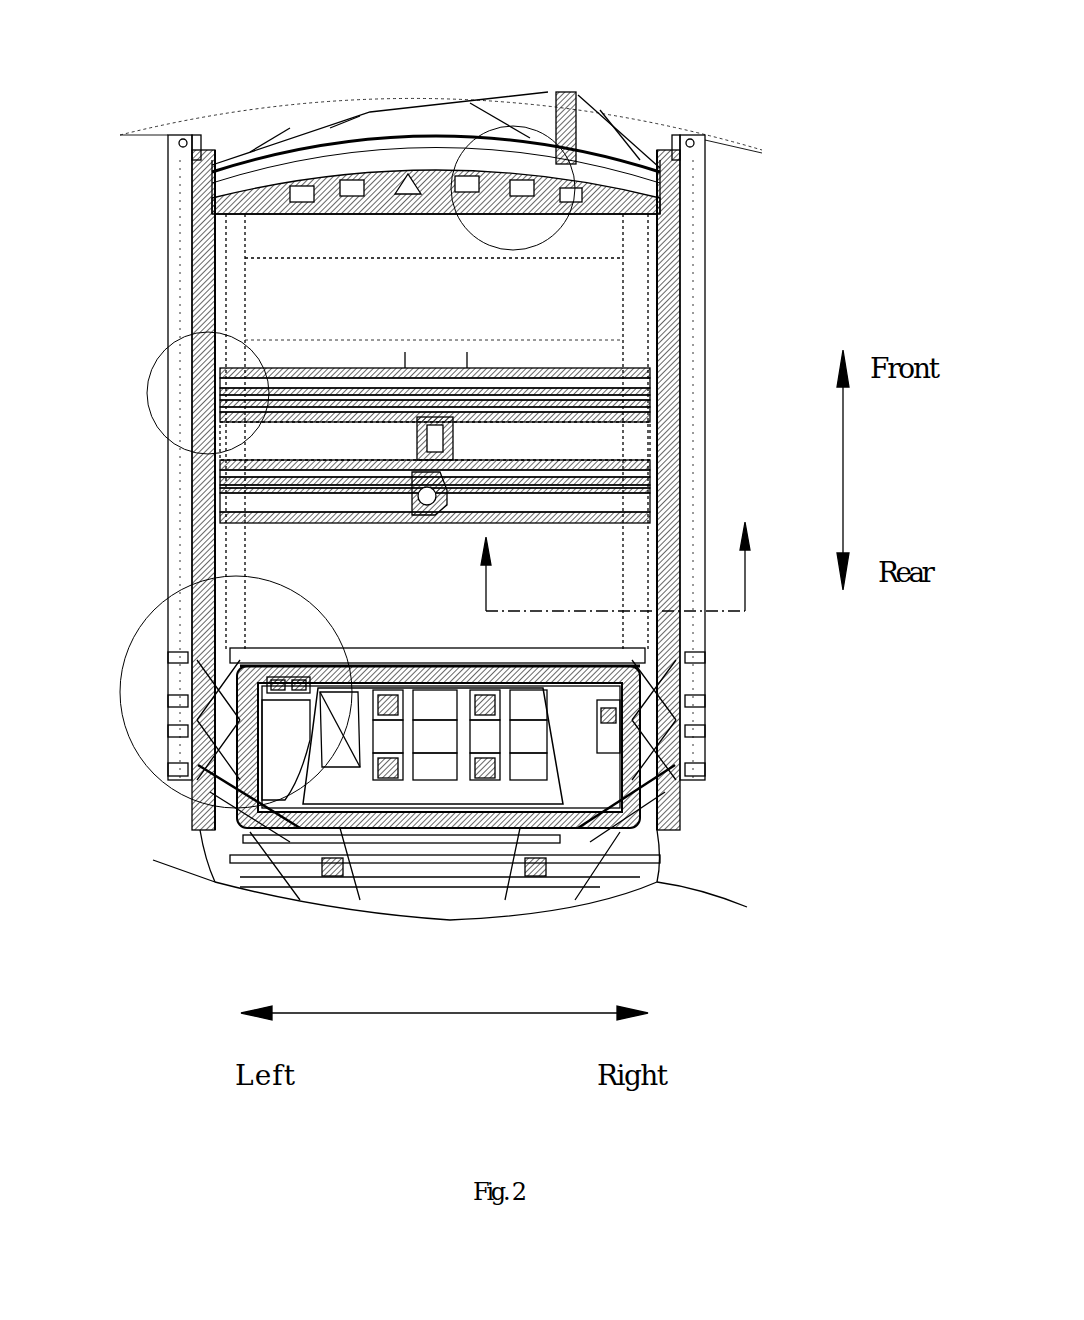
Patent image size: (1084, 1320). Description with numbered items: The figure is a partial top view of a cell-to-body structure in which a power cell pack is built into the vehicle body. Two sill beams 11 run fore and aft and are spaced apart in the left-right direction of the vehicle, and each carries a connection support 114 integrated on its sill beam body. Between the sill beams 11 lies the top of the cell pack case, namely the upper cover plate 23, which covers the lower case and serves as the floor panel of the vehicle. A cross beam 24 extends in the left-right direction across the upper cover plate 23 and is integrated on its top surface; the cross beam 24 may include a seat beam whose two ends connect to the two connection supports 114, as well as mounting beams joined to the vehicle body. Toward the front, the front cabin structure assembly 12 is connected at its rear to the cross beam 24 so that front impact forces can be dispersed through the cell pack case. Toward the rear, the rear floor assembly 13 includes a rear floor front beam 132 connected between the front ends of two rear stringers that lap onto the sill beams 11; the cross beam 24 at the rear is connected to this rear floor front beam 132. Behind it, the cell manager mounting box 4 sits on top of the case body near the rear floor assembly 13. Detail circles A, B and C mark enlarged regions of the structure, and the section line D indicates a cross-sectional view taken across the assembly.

The cell manager mounting box 4 is at (458, 650).
The sill beam 11 is at (180, 555).
The front cabin structure assembly 12 is at (610, 130).
The rear floor assembly 13 is at (668, 856).
The upper cover plate 23 is at (600, 313).
The cross beam 24 is at (558, 380).
The connection support 114 is at (198, 428).
The rear floor front beam 132 is at (383, 653).
The detail view A is at (197, 350).
The detail view B is at (483, 130).
The detail view C is at (121, 757).
The section D- D is at (620, 566).